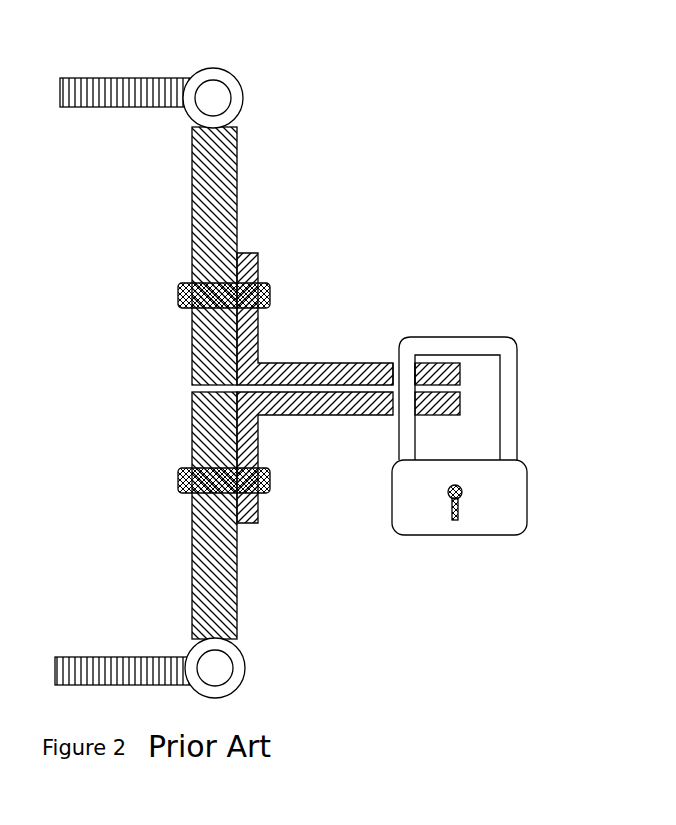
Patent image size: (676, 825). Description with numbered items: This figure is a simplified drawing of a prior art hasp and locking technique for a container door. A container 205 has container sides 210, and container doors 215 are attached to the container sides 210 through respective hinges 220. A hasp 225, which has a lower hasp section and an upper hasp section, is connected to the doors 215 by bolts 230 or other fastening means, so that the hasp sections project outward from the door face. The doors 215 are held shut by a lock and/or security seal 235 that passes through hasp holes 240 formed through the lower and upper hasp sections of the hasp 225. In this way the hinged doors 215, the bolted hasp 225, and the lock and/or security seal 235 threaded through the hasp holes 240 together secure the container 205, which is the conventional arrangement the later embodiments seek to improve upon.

The container 205 is at (140, 52).
The container sides 210 is at (124, 638).
The container doors 215 is at (177, 246).
The hinges 220 is at (270, 97).
The hasp 225 is at (330, 525).
The bolts 230 is at (167, 309).
The lock and/or security seal 235 is at (459, 556).
The hasp holes 240 is at (435, 354).